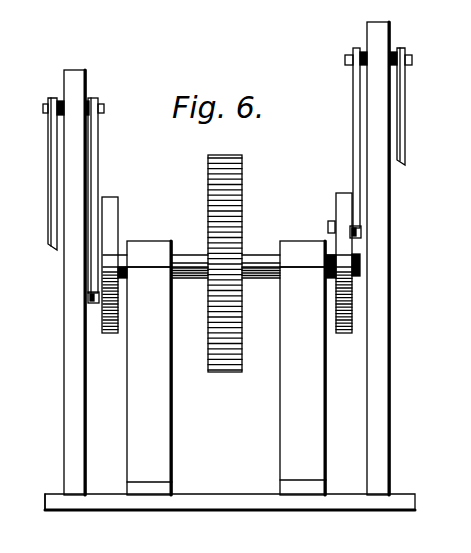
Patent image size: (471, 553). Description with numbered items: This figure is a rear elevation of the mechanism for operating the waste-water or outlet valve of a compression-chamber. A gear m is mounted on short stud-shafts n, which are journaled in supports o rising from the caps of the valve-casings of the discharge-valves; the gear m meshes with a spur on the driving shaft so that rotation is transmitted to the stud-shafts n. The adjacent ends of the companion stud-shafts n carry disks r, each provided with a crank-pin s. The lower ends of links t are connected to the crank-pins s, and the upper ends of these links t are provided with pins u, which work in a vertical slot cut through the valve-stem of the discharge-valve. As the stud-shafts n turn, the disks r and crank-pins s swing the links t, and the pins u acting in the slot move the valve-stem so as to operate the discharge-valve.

The links t is at (38, 184).
The pins u is at (43, 108).
The crank-pins s is at (88, 293).
The disks r is at (118, 226).
The short stud-shafts n is at (193, 258).
The supports o is at (154, 432).
The gears m is at (219, 372).